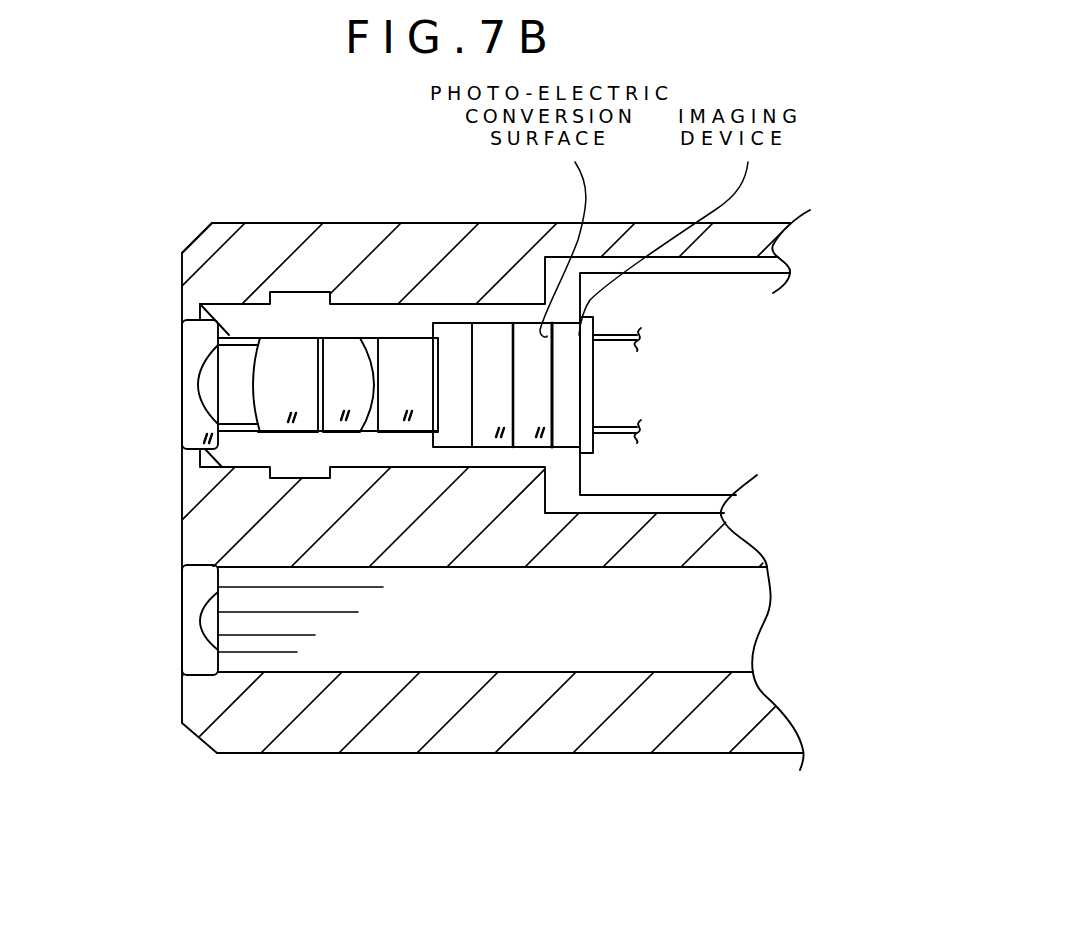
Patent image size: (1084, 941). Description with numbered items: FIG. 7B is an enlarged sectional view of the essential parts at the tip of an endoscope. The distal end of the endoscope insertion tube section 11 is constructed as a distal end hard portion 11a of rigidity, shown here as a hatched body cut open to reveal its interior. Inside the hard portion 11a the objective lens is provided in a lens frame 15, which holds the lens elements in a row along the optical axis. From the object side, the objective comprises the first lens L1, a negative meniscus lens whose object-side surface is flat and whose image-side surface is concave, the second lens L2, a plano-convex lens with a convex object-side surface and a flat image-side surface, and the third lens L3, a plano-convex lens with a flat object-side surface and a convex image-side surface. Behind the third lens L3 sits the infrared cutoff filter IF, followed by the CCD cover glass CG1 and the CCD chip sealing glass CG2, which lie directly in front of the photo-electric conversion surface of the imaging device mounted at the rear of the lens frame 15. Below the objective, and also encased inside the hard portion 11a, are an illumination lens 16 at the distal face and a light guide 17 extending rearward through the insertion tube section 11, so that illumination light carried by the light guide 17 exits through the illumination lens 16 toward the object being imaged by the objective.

The endoscope insertion tube section 11 is at (837, 173).
The distal end hard portion 11a is at (217, 196).
The lens frame 15 is at (228, 317).
The illumination lens 16 is at (178, 600).
The light guide 17 is at (493, 652).
The first lens L1 is at (180, 360).
The second lens L2 is at (288, 345).
The third lens L3 is at (345, 345).
The infrared cutoff filter IF is at (405, 345).
The CCD cover glass CG1 is at (490, 327).
The CCD chip sealing glass CG2 is at (531, 328).